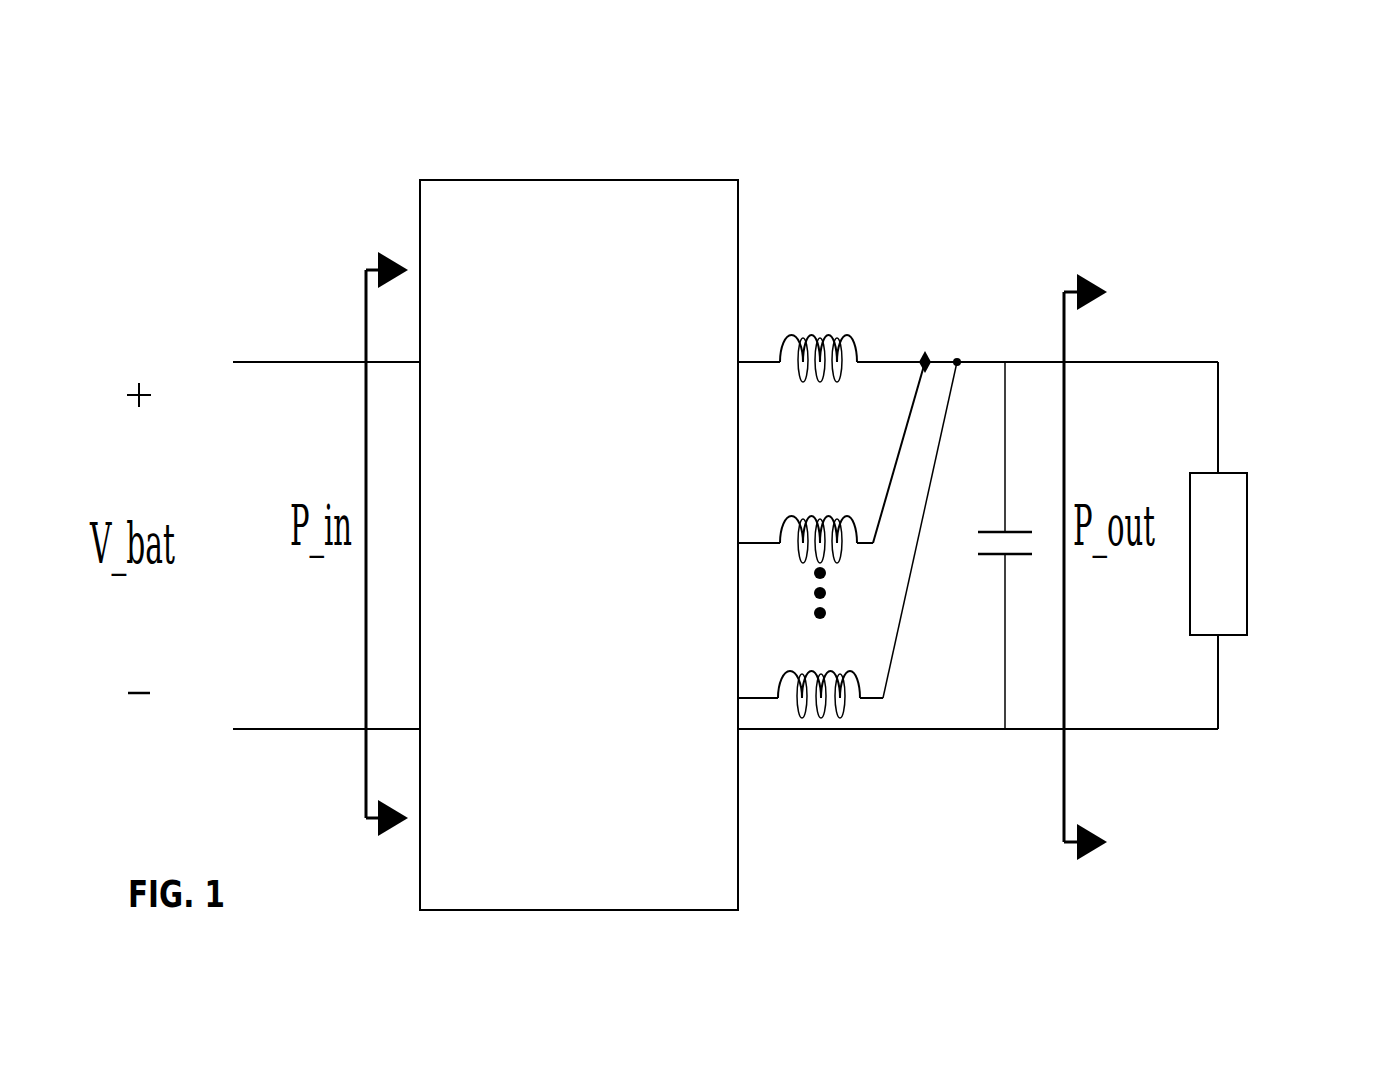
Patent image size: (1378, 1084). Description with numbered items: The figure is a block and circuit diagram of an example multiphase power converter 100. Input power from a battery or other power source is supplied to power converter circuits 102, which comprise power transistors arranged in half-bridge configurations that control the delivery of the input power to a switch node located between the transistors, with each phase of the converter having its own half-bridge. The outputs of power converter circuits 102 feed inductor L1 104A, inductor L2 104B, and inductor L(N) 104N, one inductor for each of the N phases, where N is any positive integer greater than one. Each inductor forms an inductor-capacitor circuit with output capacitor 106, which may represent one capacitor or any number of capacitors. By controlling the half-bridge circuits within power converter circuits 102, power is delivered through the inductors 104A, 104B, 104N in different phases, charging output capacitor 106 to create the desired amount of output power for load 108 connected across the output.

The multiphase power converter 100 is at (1248, 124).
The power converter circuits 102 is at (561, 604).
The inductor L1 104A is at (837, 340).
The inductor L2 104B is at (838, 518).
The inductor L(N) 104N is at (838, 680).
The output capacitor 106 is at (1025, 557).
The load 108 is at (1250, 612).